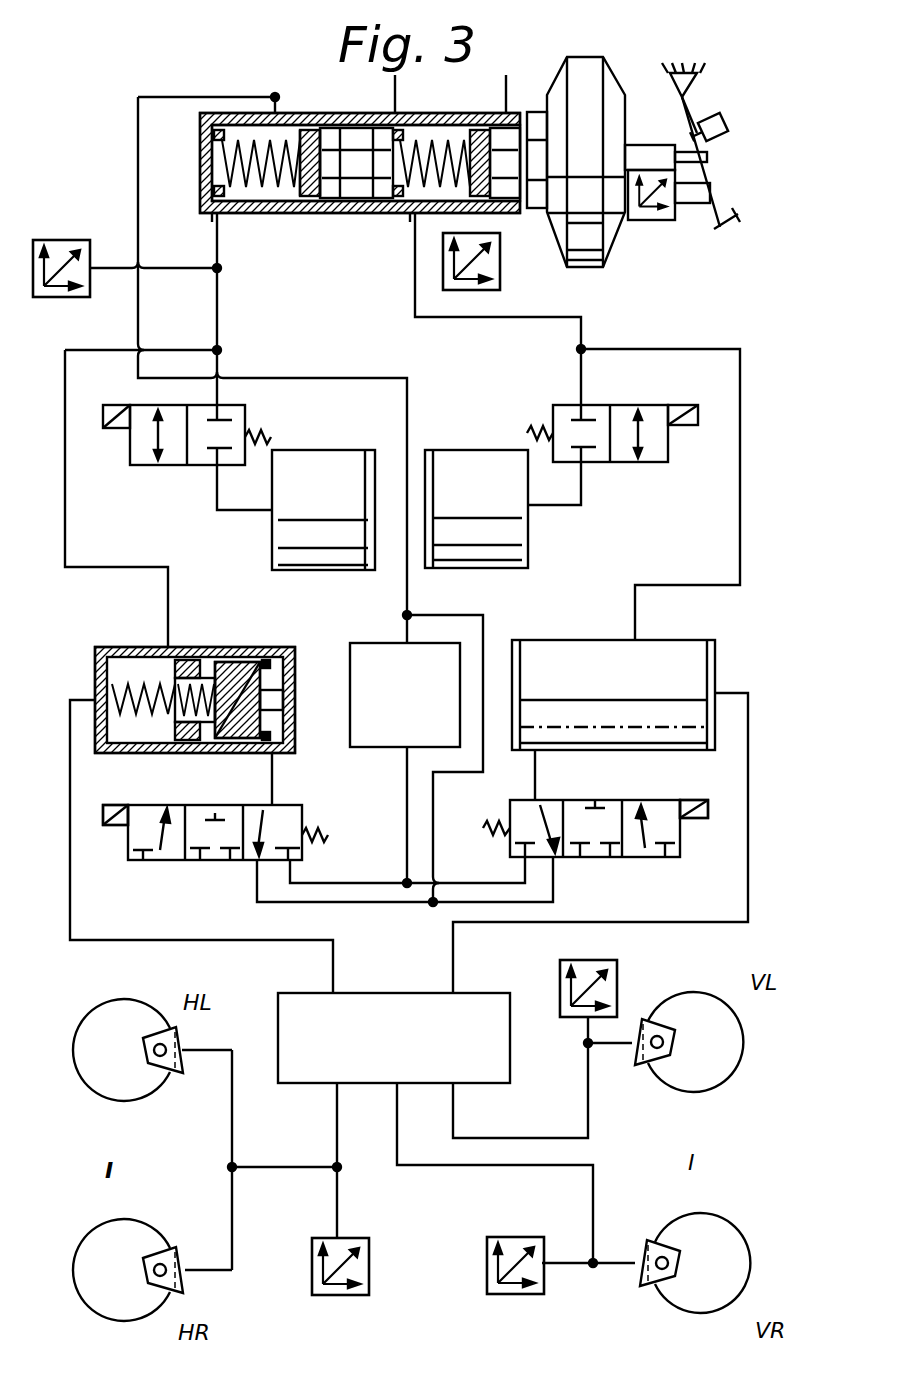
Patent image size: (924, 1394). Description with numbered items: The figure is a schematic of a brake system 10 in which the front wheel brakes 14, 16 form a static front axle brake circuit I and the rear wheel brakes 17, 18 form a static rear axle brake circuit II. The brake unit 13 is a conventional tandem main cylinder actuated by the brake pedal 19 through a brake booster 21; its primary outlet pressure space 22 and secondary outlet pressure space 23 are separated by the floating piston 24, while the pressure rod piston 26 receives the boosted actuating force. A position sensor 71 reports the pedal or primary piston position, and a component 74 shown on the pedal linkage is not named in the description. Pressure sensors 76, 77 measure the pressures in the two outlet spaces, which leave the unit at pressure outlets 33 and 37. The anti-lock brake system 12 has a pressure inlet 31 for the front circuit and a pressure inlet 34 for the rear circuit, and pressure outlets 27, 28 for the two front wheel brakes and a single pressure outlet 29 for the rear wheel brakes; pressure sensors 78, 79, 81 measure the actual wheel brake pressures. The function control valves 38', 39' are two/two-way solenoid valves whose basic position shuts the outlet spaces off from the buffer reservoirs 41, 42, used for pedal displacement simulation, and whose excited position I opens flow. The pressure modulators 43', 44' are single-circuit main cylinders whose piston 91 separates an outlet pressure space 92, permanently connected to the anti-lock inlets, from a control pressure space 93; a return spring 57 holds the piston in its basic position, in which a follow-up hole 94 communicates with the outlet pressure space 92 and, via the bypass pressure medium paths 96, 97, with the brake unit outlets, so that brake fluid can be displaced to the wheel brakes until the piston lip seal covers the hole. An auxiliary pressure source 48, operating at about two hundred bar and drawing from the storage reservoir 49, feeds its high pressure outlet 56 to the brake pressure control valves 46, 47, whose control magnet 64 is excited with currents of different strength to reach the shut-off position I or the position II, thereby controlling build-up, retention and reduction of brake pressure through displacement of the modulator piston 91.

The brake system 10 is at (110, 136).
The anti-lock brake system 12 is at (372, 993).
The brake unit 13 is at (355, 121).
The left-hand front wheel brake 14 is at (689, 1042).
The right-hand front wheel brake 16 is at (695, 1263).
The rear wheel brake 17 is at (128, 1050).
The rear wheel brake 18 is at (128, 1270).
The brake pedal 19 is at (735, 215).
The brake booster 21 is at (614, 66).
The primary outlet pressure space 22 is at (455, 113).
The secondary outlet pressure space 23 is at (225, 175).
The floating piston 24 is at (323, 113).
The pressure rod piston 26 is at (521, 113).
The pressure outlet 27 is at (455, 1083).
The pressure outlet 28 is at (398, 1083).
The pressure outlet 29 is at (337, 1083).
The brake pressure inlet 31 is at (455, 995).
The pressure outlet 33 is at (415, 212).
The pressure inlet 34 is at (330, 995).
The pressure outlet 37 is at (220, 214).
The function control valve 38' is at (612, 472).
The function control valve 39' is at (185, 475).
The buffer reservoir 41 is at (470, 440).
The buffer reservoir 42 is at (325, 440).
The pressure modulator 43' is at (613, 666).
The pressure modulator 44' is at (220, 680).
The brake pressure control valve 46 is at (675, 843).
The brake pressure control valve 47 is at (130, 862).
The auxiliary pressure source 48 is at (375, 630).
The storage reservoir 49 is at (275, 97).
The high pressure outlet 56 is at (405, 752).
The return spring 57 is at (138, 682).
The control magnet 64 is at (108, 812).
The position sensor 71 is at (675, 220).
The pedal force sensor 74 is at (727, 120).
The pressure sensor 76 is at (500, 268).
The pressure sensor 77 is at (57, 250).
The pressure sensor 78 is at (560, 995).
The pressure sensor 79 is at (513, 1243).
The pressure sensor 81 is at (370, 1258).
The piston 91 is at (290, 728).
The outlet pressure space 92 is at (115, 672).
The control pressure space 93 is at (295, 672).
The follow-up hole 94 is at (172, 650).
The pressure medium path 96 is at (740, 510).
The pressure medium path 97 is at (65, 470).